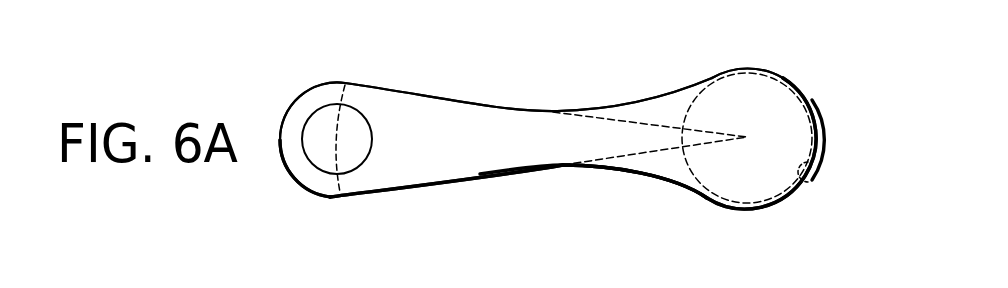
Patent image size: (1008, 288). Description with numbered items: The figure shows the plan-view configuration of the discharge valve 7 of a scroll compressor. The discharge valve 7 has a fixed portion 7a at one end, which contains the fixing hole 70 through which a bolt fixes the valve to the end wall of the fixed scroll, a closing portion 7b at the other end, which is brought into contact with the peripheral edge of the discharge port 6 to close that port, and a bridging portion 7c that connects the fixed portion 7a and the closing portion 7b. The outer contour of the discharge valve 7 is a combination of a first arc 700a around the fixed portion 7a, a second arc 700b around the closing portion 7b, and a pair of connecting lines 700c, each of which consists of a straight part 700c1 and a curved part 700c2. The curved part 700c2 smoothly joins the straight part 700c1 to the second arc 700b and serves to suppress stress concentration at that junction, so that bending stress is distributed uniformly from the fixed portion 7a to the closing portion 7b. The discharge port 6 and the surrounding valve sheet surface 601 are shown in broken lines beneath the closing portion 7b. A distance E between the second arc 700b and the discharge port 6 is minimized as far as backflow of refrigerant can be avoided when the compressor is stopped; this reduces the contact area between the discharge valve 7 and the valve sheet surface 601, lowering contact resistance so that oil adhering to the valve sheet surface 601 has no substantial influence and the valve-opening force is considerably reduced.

The discharge valve 7 is at (477, 95).
The fixed portion 7a is at (303, 108).
The closing portion 7b is at (740, 92).
The bridging portion 7c is at (458, 166).
The fixing hole 70 is at (352, 125).
The first arc 700a is at (293, 178).
The second arc 700b is at (819, 146).
The connecting line 700c is at (523, 107).
The straight part 700c1 is at (540, 174).
The curved part 700c2 is at (643, 178).
The valve sheet surface 601 is at (818, 118).
The discharge port 6 is at (806, 182).
The distance E is at (775, 112).